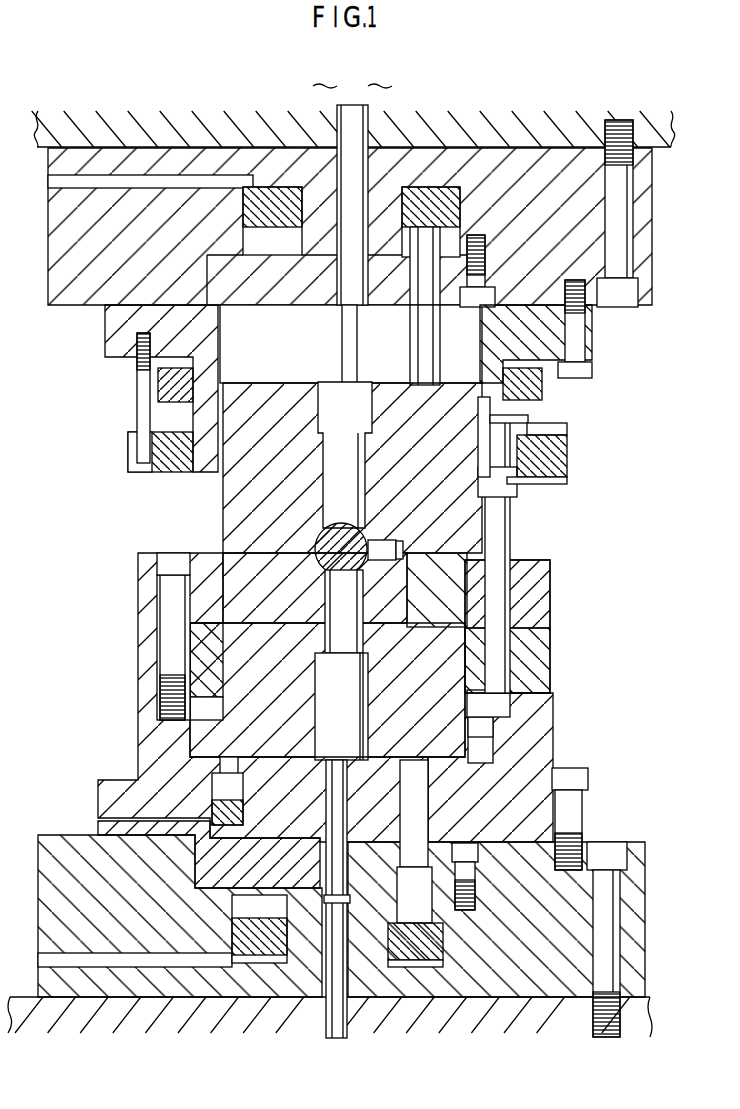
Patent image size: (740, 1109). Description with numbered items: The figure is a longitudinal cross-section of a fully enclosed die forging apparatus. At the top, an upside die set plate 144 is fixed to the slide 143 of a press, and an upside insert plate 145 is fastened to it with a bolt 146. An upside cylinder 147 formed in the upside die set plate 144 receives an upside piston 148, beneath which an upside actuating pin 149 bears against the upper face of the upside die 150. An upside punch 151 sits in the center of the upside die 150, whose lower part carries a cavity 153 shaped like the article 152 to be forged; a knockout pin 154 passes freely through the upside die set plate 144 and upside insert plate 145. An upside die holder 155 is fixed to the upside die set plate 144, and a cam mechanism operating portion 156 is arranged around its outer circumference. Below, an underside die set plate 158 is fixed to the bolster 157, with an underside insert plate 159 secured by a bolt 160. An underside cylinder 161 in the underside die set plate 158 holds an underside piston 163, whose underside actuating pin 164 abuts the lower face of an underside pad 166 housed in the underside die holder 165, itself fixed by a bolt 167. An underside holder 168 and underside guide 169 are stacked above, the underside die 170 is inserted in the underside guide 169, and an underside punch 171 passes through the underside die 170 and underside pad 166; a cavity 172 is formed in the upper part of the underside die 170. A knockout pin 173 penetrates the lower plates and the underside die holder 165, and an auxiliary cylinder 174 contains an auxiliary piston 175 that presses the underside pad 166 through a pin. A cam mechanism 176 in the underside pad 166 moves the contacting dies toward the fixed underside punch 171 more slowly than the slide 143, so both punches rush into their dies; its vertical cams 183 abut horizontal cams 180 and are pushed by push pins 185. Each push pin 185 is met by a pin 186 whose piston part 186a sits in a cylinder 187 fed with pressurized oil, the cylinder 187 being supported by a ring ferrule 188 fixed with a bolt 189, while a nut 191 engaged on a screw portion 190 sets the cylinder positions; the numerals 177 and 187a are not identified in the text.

The slide 143 is at (115, 124).
The upside die set plate 144 is at (643, 228).
The upside insert plate 145 is at (490, 280).
The bolt 146 is at (470, 307).
The upside cylinder 147 is at (280, 188).
The upside piston 148 is at (426, 200).
The upside actuating pin 149 is at (434, 243).
The upside die 150 is at (254, 403).
The upside punch 151 is at (327, 387).
The article 152 is at (318, 572).
The cavity 153 is at (390, 537).
The knockout pin 154 is at (348, 355).
The upside die holder 155 is at (560, 347).
The cam mechanism operating portion 156 is at (570, 427).
The bolster 157 is at (437, 1013).
The underside die set plate 158 is at (588, 952).
The underside insert plate 159 is at (196, 877).
The bolt 160 is at (475, 897).
The underside cylinder 161 is at (267, 962).
The underside piston 163 is at (432, 945).
The underside actuating pin 164 is at (413, 828).
The underside die holder 165 is at (540, 758).
The underside pad 166 is at (225, 710).
The bolt 167 is at (568, 807).
The underside holder 168 is at (533, 663).
The underside guide 169 is at (531, 626).
The underside die 170 is at (217, 553).
The underside punch 171 is at (345, 690).
The cavity 172 is at (345, 568).
The knockout pin 173 is at (298, 864).
The auxiliary cylinder 174 is at (238, 821).
The auxiliary piston 175 is at (236, 797).
The cam mechanism 176 is at (503, 723).
The housing 177 is at (197, 740).
The horizontal cam 180 is at (482, 763).
The vertical cam 183 is at (505, 707).
The push pin 185 is at (533, 600).
The pin 186 is at (500, 530).
The piston part 186a is at (518, 478).
The cylinder 187 is at (568, 447).
The plate 187a is at (532, 418).
The ring ferrule 188 is at (558, 480).
The bolt 189 is at (142, 465).
The screw portion 190 is at (190, 380).
The nut 191 is at (545, 398).